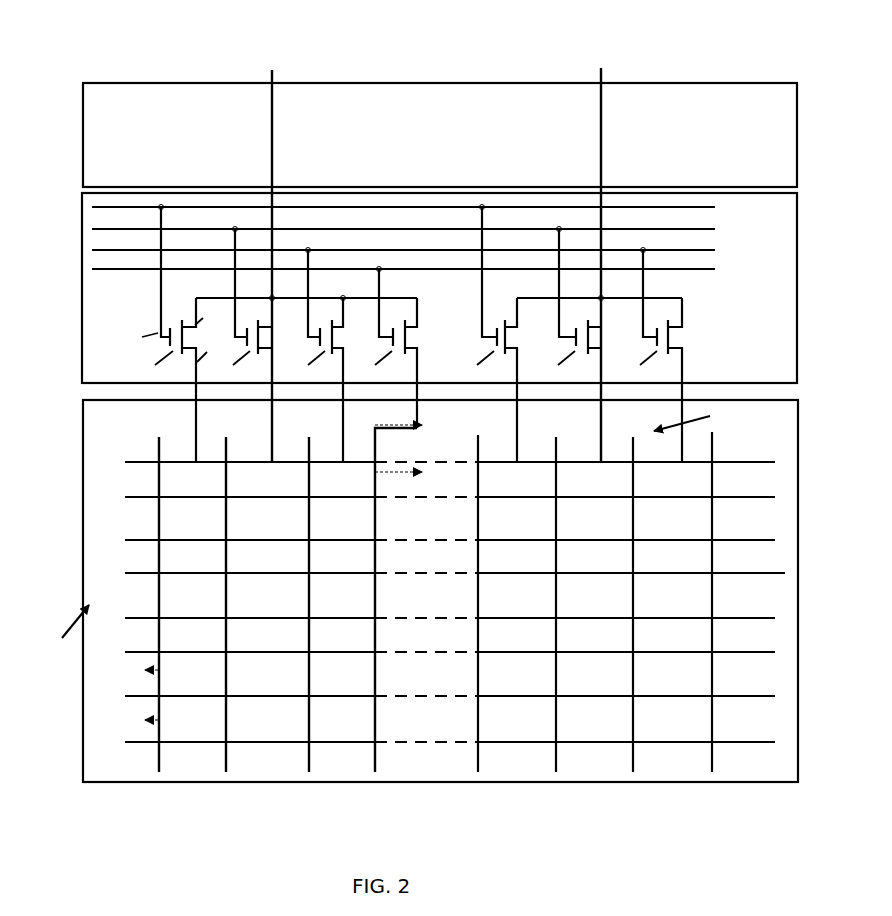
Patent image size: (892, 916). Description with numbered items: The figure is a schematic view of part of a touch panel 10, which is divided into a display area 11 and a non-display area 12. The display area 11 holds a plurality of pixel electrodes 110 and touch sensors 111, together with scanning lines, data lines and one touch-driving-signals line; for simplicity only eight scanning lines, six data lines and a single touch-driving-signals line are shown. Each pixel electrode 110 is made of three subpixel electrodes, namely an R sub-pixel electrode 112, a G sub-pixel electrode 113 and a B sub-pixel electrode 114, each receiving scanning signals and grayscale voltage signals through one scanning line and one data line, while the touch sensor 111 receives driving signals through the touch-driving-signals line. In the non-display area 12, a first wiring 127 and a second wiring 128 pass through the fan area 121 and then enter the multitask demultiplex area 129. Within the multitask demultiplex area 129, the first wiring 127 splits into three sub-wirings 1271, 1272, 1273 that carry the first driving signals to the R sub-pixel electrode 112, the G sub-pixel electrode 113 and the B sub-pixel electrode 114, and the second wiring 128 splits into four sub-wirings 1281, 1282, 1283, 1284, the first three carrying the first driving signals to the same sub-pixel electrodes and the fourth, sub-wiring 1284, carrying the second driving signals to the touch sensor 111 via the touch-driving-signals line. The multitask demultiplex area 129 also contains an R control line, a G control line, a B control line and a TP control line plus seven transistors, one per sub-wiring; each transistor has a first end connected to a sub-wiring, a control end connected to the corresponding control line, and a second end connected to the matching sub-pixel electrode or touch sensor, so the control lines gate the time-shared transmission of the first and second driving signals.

The touch panel 10 is at (423, 37).
The display area 11 is at (78, 488).
The non-display area 12 is at (44, 224).
The pixel electrode 110 is at (300, 828).
The touch sensor 111 is at (445, 768).
The R sub-pixel electrode 112 is at (180, 757).
The G sub-pixel electrode 113 is at (255, 757).
The B sub-pixel electrode 114 is at (340, 757).
The fan area 121 is at (82, 176).
The first wiring 127 is at (600, 133).
The second wiring 128 is at (270, 133).
The multitask demultiplex area 129 is at (82, 316).
The sub-wiring 1271 is at (518, 306).
The sub-wiring 1272 is at (600, 312).
The sub-wiring 1273 is at (683, 300).
The sub-wiring 1281 is at (197, 307).
The sub-wiring 1282 is at (273, 306).
The sub-wiring 1283 is at (344, 306).
The sub-wiring 1284 is at (418, 302).